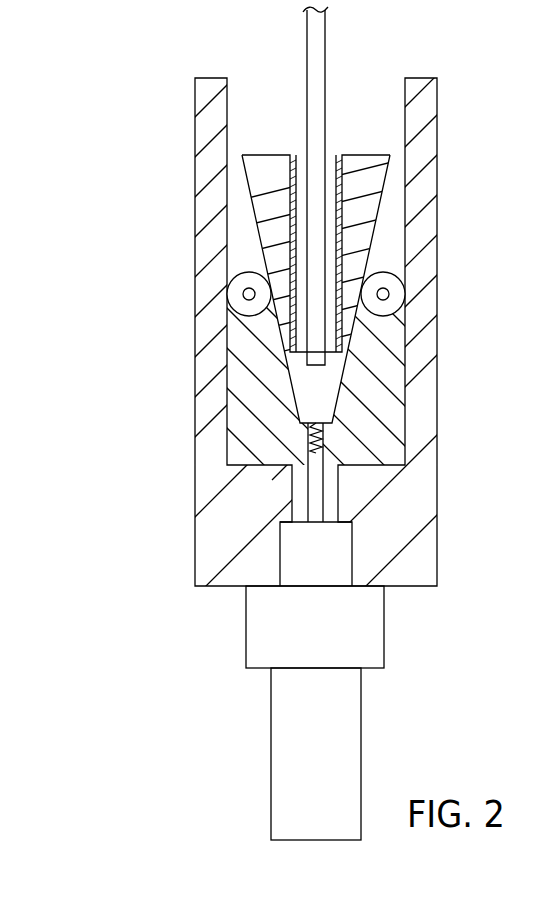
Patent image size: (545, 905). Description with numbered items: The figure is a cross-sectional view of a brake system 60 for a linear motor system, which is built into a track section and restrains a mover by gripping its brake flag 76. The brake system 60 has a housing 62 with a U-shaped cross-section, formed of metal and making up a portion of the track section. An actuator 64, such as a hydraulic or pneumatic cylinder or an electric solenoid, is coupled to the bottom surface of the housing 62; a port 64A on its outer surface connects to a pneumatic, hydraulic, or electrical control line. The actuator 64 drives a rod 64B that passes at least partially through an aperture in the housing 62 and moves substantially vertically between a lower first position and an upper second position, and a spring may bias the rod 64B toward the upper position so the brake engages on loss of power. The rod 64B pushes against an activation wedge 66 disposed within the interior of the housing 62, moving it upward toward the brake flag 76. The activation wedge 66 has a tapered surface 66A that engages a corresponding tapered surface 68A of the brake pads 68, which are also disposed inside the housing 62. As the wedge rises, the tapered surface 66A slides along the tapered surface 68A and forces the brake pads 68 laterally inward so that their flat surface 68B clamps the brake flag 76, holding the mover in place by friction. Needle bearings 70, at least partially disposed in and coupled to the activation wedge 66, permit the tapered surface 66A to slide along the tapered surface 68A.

The brake system 60 is at (112, 57).
The housing 62 is at (195, 127).
The actuator 64 is at (271, 753).
The port 64A is at (246, 628).
The rod 64B is at (315, 497).
The activation wedge 66 is at (227, 424).
The tapered surface 66A is at (287, 382).
The brake pads 68 is at (318, 260).
The tapered surface 68A is at (262, 197).
The flat surface 68B is at (305, 236).
The needle bearings 70 is at (234, 279).
The brake flag 76 is at (325, 60).